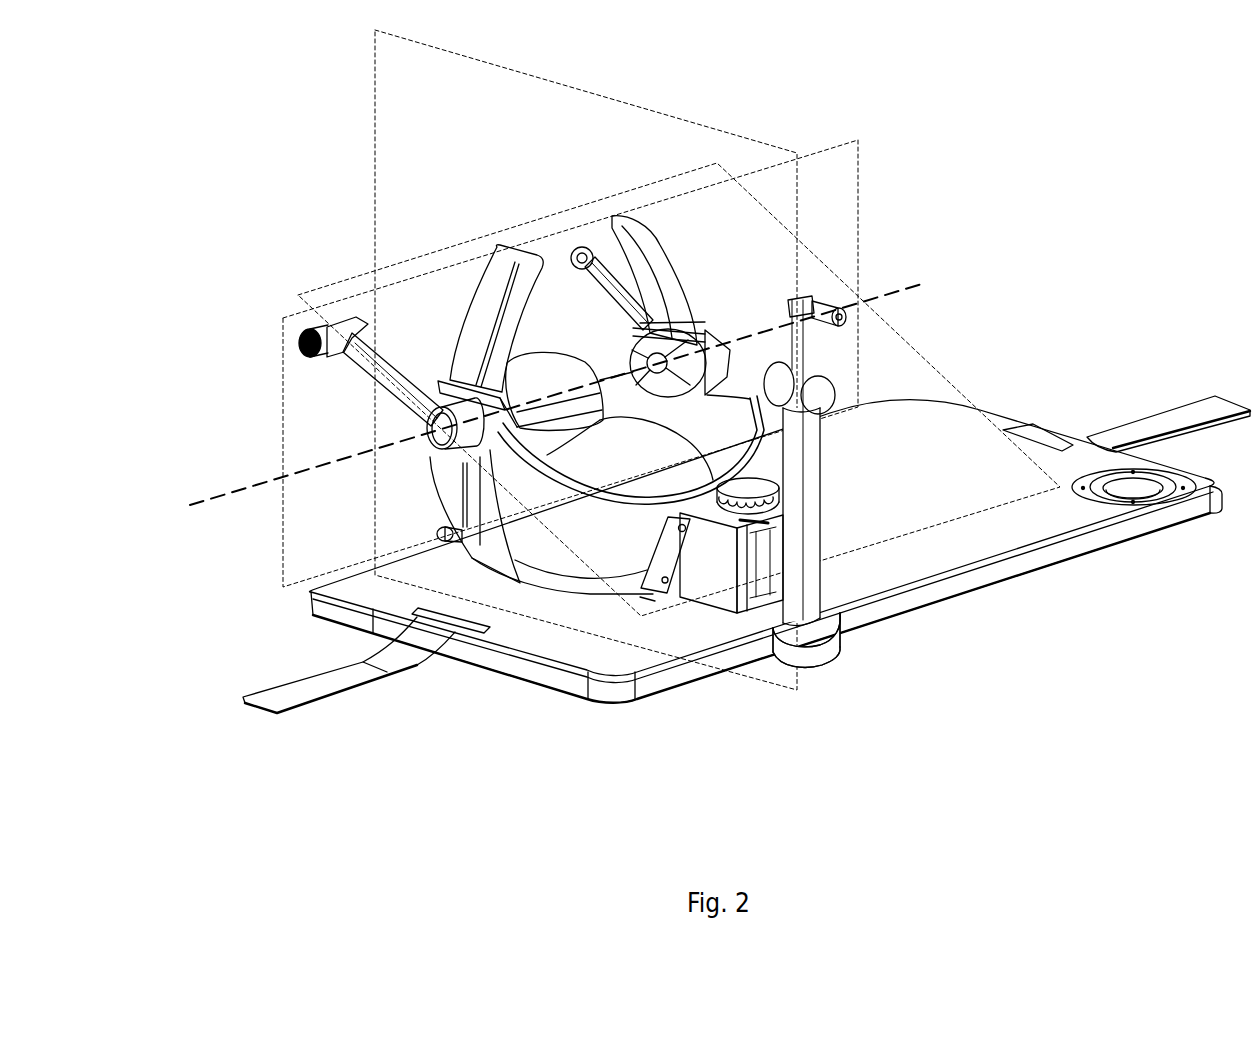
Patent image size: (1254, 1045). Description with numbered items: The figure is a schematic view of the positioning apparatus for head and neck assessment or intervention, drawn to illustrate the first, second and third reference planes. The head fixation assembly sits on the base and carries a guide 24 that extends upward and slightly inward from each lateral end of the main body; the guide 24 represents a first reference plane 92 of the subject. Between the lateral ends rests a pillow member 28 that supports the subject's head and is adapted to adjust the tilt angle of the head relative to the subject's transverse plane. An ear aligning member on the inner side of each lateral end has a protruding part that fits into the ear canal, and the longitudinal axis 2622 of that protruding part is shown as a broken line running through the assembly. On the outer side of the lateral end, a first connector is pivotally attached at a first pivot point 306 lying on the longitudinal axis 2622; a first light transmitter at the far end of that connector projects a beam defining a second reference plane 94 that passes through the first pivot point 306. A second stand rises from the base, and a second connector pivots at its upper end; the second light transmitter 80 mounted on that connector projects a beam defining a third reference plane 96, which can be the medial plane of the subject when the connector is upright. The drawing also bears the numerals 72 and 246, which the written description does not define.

The guide 24 is at (486, 242).
The pillow member 28 is at (557, 373).
The support post 72 is at (822, 368).
The second light transmitter 80 is at (845, 313).
The first reference plane 92 is at (280, 425).
The second reference plane 94 is at (760, 203).
The third reference plane 96 is at (700, 125).
The head pad 246 is at (660, 280).
The first pivot point 306 is at (422, 437).
The longitudinal axis 2622 is at (897, 290).